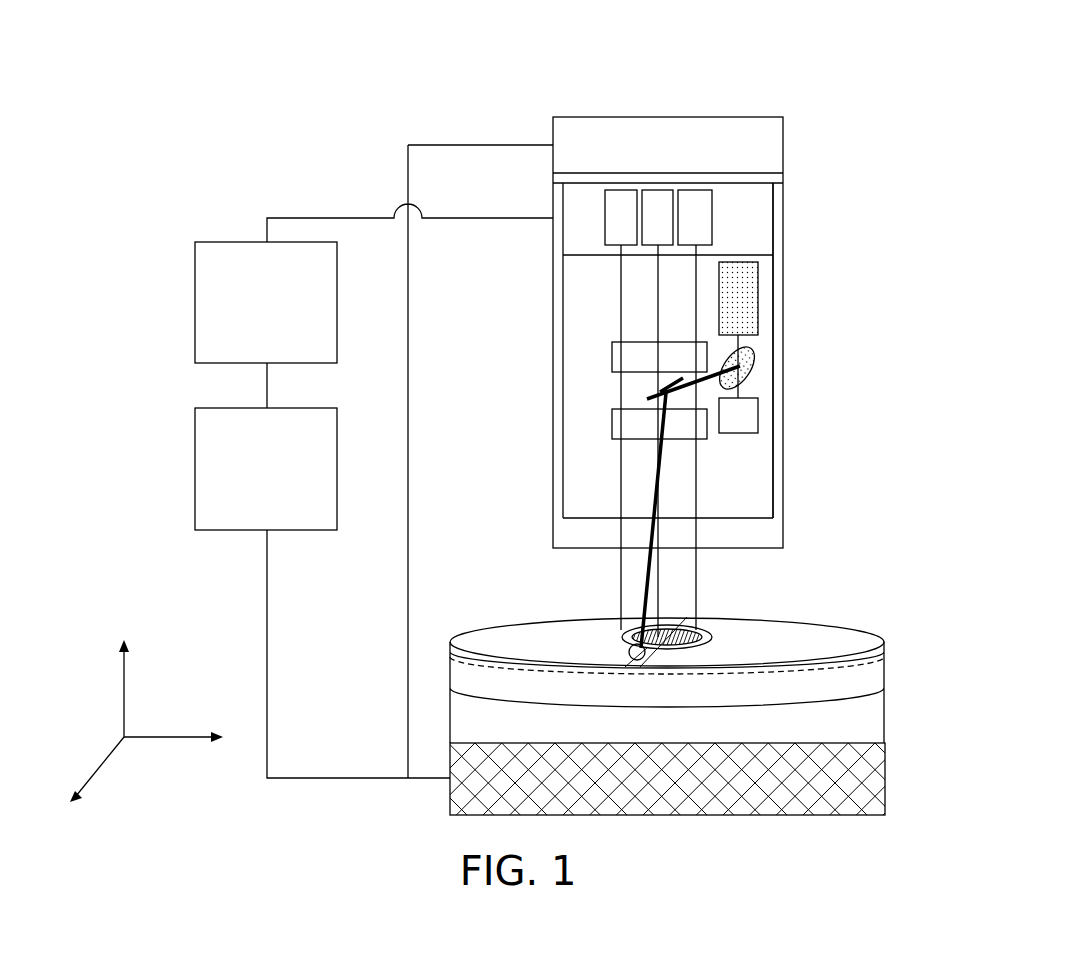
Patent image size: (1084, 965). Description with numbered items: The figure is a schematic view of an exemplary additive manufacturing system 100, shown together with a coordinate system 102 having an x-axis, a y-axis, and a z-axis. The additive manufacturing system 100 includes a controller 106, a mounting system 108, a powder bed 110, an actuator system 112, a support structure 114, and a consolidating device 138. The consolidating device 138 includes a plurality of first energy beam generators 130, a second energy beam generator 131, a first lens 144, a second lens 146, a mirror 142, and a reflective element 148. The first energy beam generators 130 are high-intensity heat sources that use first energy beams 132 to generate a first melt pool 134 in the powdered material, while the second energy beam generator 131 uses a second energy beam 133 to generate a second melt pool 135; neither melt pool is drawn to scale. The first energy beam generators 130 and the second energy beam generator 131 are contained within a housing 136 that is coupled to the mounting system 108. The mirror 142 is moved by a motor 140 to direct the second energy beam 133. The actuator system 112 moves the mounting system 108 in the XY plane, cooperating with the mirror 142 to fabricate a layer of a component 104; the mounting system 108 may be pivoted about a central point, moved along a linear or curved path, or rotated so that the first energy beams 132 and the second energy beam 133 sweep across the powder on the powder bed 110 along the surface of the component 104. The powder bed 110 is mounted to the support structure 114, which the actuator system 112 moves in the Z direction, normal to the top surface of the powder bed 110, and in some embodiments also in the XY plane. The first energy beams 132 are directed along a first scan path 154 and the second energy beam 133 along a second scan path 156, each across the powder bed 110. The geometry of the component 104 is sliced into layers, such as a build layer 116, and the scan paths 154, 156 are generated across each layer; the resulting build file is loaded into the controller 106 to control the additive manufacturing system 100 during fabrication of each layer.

The additive manufacturing system 100 is at (770, 68).
The coordinate system 102 is at (82, 694).
The component 104 is at (885, 672).
The controller 106 is at (247, 315).
The mounting system 108 is at (770, 147).
The powder bed 110 is at (885, 718).
The actuator system 112 is at (247, 482).
The support structure 114 is at (885, 783).
The build layer 116 is at (842, 640).
The first energy beam generators 130 is at (696, 190).
The second energy beam generator 131 is at (758, 283).
The first energy beams 132 is at (696, 267).
The second energy beam 133 is at (650, 578).
The first melt pool 134 is at (710, 630).
The second melt pool 135 is at (629, 649).
The housing 136 is at (783, 316).
The consolidating device 138 is at (833, 321).
The motor 140 is at (758, 412).
The mirror 142 is at (755, 356).
The first lens 144 is at (611, 354).
The second lens 146 is at (611, 428).
The reflective element 148 is at (648, 397).
The first scan path 154 is at (655, 650).
The second scan path 156 is at (628, 660).